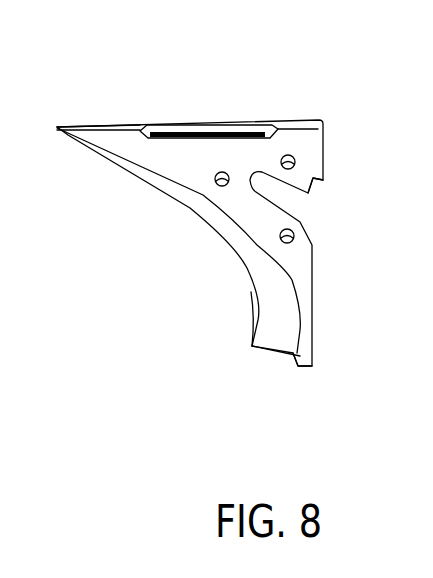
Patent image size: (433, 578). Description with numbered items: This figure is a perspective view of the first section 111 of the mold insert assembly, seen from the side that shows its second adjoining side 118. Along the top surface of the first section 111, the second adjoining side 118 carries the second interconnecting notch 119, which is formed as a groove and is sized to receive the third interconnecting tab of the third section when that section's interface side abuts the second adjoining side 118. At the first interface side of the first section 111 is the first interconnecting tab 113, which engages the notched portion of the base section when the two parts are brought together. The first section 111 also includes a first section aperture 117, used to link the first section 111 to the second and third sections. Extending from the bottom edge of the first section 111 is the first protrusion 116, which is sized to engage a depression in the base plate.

The first section 111 is at (150, 232).
The first interconnecting tab 113 is at (312, 184).
The first protrusion 116 is at (297, 366).
The first section aperture 117 is at (290, 156).
The second adjoining side 118 is at (135, 138).
The second interconnecting notch 119 is at (188, 133).